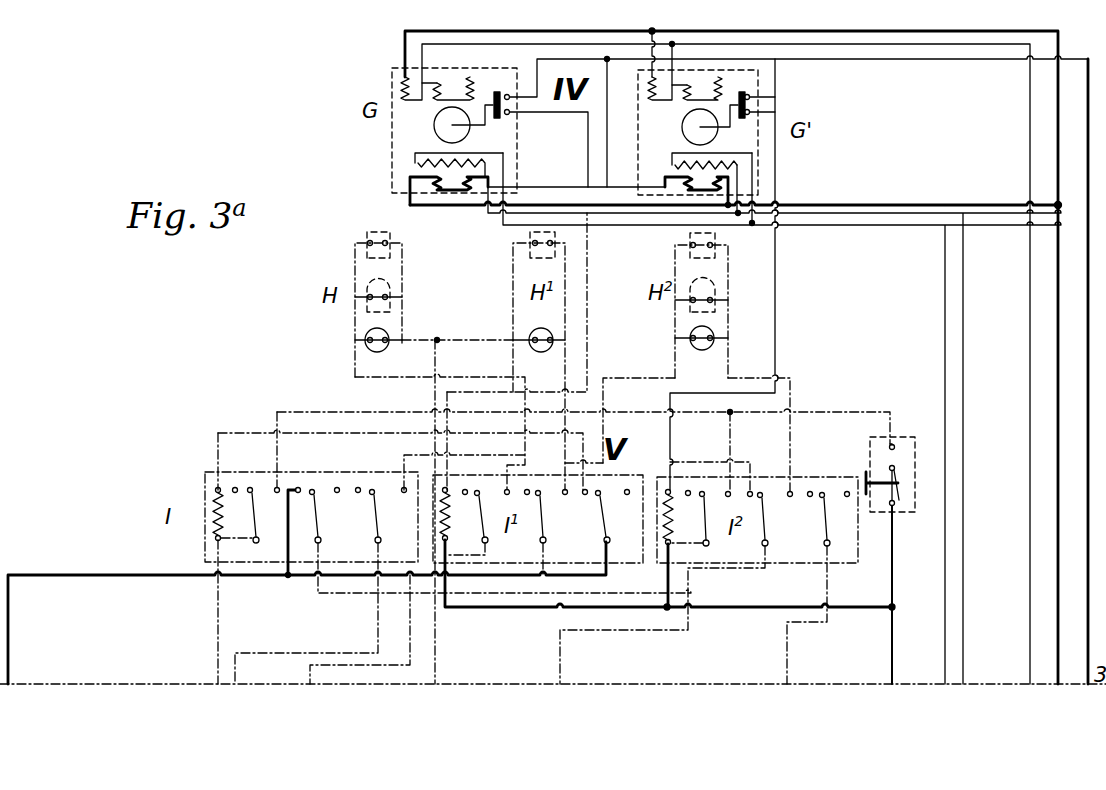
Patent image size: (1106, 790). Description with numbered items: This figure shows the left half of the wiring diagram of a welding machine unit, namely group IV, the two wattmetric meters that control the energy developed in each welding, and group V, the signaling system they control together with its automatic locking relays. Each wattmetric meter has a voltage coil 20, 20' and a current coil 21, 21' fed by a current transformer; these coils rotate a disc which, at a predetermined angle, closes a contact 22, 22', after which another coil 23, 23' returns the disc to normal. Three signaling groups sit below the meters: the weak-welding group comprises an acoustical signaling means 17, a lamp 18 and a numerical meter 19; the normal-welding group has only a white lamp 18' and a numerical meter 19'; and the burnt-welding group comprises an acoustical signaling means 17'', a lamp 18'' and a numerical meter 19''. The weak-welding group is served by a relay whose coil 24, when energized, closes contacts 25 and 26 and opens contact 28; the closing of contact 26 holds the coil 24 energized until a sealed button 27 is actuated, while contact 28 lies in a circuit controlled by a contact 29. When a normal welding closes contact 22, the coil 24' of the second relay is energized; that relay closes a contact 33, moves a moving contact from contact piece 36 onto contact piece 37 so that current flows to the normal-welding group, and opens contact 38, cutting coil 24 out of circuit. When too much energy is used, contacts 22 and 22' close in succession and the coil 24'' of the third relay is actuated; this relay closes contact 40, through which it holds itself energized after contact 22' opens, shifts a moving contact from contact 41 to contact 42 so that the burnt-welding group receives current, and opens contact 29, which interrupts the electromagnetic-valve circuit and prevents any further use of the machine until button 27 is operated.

The acoustical signaling means 17 is at (393, 294).
The acoustical signaling means 17'' is at (723, 294).
The lamp 18 is at (359, 336).
The white lamp 18' is at (523, 334).
The lamp 18'' is at (721, 334).
The numerical meter 19 is at (397, 241).
The numerical meter 19' is at (519, 246).
The numerical meter 19'' is at (730, 246).
The voltage coil 20 is at (421, 187).
The voltage coil 20' is at (669, 185).
The current coil 21 is at (430, 156).
The current coil 21' is at (681, 151).
The contact 22 is at (520, 114).
The contact 22' is at (776, 103).
The return coil 23 is at (453, 74).
The return coil 23' is at (702, 71).
The coil of relay I 24 is at (190, 487).
The coil of relay I¹ 24' is at (459, 514).
The coil of relay I² 24'' is at (684, 529).
The contact 25 is at (276, 493).
The contact 26 is at (402, 487).
The sealed button 27 is at (896, 470).
The contact 28 is at (299, 487).
The contact 29 is at (813, 492).
The contact 33 is at (466, 488).
The contact piece 36 is at (520, 496).
The contact piece 37 is at (566, 509).
The contact 38 is at (601, 498).
The contact 40 is at (700, 519).
The contact 41 is at (752, 489).
The contact 42 is at (791, 490).